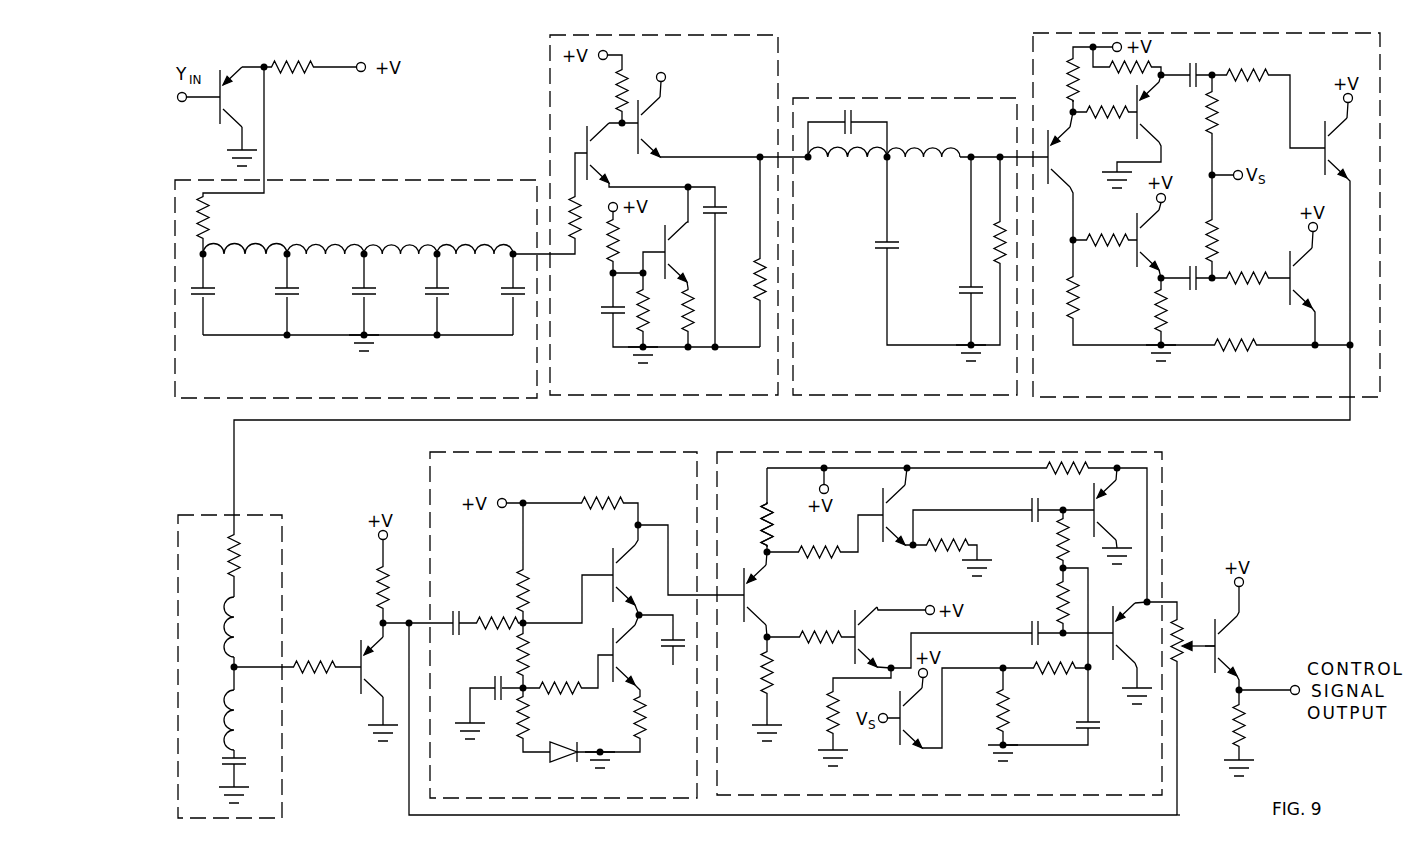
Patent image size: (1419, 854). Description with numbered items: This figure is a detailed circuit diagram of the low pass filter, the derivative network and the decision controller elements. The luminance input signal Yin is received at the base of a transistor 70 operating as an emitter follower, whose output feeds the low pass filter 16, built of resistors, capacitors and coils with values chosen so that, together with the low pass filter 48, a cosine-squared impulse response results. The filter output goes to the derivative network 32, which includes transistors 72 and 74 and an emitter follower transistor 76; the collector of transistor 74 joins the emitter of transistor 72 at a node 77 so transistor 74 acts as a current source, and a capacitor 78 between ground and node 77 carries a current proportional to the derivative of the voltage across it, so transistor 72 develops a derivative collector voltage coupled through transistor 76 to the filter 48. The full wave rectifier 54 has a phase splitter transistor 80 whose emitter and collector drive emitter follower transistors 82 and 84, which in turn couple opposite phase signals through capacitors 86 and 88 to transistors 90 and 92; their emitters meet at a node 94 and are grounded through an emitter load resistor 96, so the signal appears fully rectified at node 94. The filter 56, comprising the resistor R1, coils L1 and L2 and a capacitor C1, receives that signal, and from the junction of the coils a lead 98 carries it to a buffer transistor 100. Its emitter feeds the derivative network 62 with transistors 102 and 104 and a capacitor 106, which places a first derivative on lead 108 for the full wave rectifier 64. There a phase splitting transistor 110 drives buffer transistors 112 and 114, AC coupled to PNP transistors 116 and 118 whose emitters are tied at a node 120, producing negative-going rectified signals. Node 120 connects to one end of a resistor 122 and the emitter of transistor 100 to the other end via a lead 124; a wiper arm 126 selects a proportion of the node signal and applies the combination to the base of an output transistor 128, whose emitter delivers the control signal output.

The transistor 70 is at (226, 97).
The low pass filter 16 is at (359, 180).
The derivative network 32 is at (550, 83).
The transistor 72 is at (594, 157).
The transistor 74 is at (671, 256).
The emitter follower transistor 76 is at (648, 126).
The node 77 is at (686, 186).
The capacitor 78 is at (719, 216).
The low pass filter 48 is at (862, 98).
The full wave rectifier 54 is at (1031, 53).
The transistor 80 is at (1056, 158).
The emitter follower transistor 82 is at (1145, 113).
The emitter follower transistor 84 is at (1145, 242).
The capacitor 86 is at (1199, 71).
The capacitor 88 is at (1200, 290).
The transistor 90 is at (1333, 147).
The transistor 92 is at (1296, 280).
The node 94 is at (1347, 352).
The emitter load resistor 96 is at (1234, 354).
The filter 56 is at (276, 515).
The resistor R1 is at (225, 559).
The coil L1 is at (221, 625).
The coil L2 is at (221, 710).
The capacitor C1 is at (219, 760).
The lead 98 is at (292, 666).
The buffer transistor 100 is at (360, 688).
The derivative network 62 is at (430, 461).
The transistor 102 is at (618, 575).
The transistor 104 is at (610, 643).
The capacitor 106 is at (672, 642).
The full wave rectifier 64 is at (764, 452).
The lead 108 is at (737, 592).
The phase splitting transistor 110 is at (748, 597).
The buffer transistor 112 is at (892, 512).
The buffer transistor 114 is at (858, 612).
The transistor 116 is at (1090, 494).
The transistor 118 is at (1118, 633).
The node 120 is at (1170, 602).
The resistor 122 is at (1184, 658).
The lead 124 is at (1180, 810).
The wiper arm 126 is at (1204, 639).
The output transistor 128 is at (1220, 641).